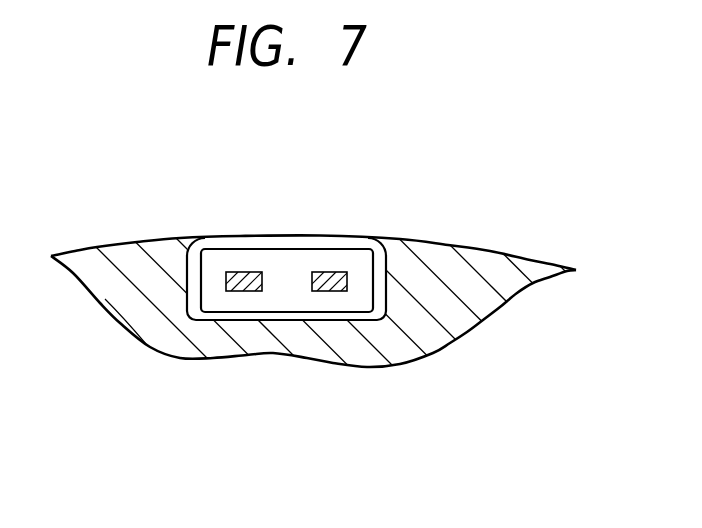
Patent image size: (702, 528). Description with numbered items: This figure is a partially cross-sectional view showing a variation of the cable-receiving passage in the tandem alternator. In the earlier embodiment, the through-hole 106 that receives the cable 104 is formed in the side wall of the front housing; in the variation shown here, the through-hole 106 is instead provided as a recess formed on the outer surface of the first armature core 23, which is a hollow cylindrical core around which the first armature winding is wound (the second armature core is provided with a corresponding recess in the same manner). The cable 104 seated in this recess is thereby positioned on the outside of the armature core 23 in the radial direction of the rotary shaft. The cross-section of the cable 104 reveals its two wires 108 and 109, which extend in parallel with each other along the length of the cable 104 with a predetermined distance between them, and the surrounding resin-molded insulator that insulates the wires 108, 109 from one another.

The first armature core 23 is at (460, 277).
The cable 104 is at (297, 232).
The through-hole 106 is at (188, 237).
The wire 108 is at (333, 275).
The wire 109 is at (235, 274).